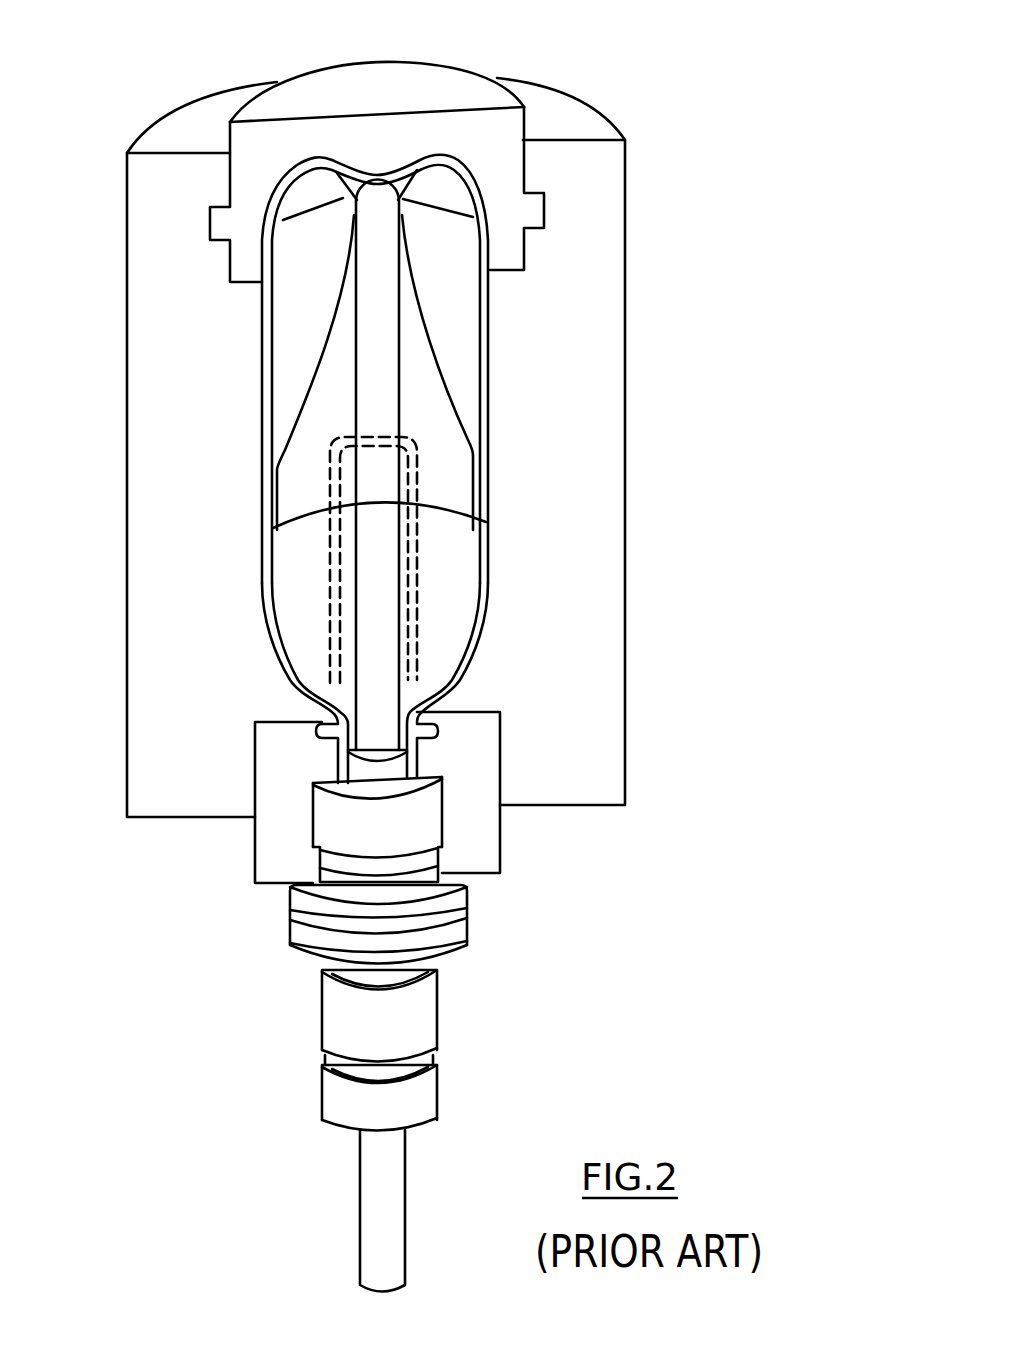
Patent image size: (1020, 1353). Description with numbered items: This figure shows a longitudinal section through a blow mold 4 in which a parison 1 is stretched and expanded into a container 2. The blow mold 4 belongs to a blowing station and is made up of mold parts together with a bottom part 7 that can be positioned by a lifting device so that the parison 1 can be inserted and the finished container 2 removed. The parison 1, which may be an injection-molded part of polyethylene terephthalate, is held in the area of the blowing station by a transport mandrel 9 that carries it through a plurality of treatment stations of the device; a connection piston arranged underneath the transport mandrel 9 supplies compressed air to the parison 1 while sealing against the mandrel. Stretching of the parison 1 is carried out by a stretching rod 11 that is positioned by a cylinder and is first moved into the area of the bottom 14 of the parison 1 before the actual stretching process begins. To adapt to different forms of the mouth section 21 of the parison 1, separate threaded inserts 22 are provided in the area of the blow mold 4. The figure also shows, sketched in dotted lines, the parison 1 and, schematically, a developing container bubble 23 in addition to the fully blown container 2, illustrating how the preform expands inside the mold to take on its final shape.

The parison 1 is at (417, 600).
The container 2 is at (487, 375).
The blow mold 4 is at (583, 440).
The bottom part 7 is at (460, 80).
The transport mandrel 9 is at (458, 943).
The stretching rod 11 is at (357, 1227).
The bottom 14 is at (410, 437).
The mouth section 21 is at (420, 743).
The threaded inserts 22 is at (483, 833).
The container bubble 23 is at (430, 335).